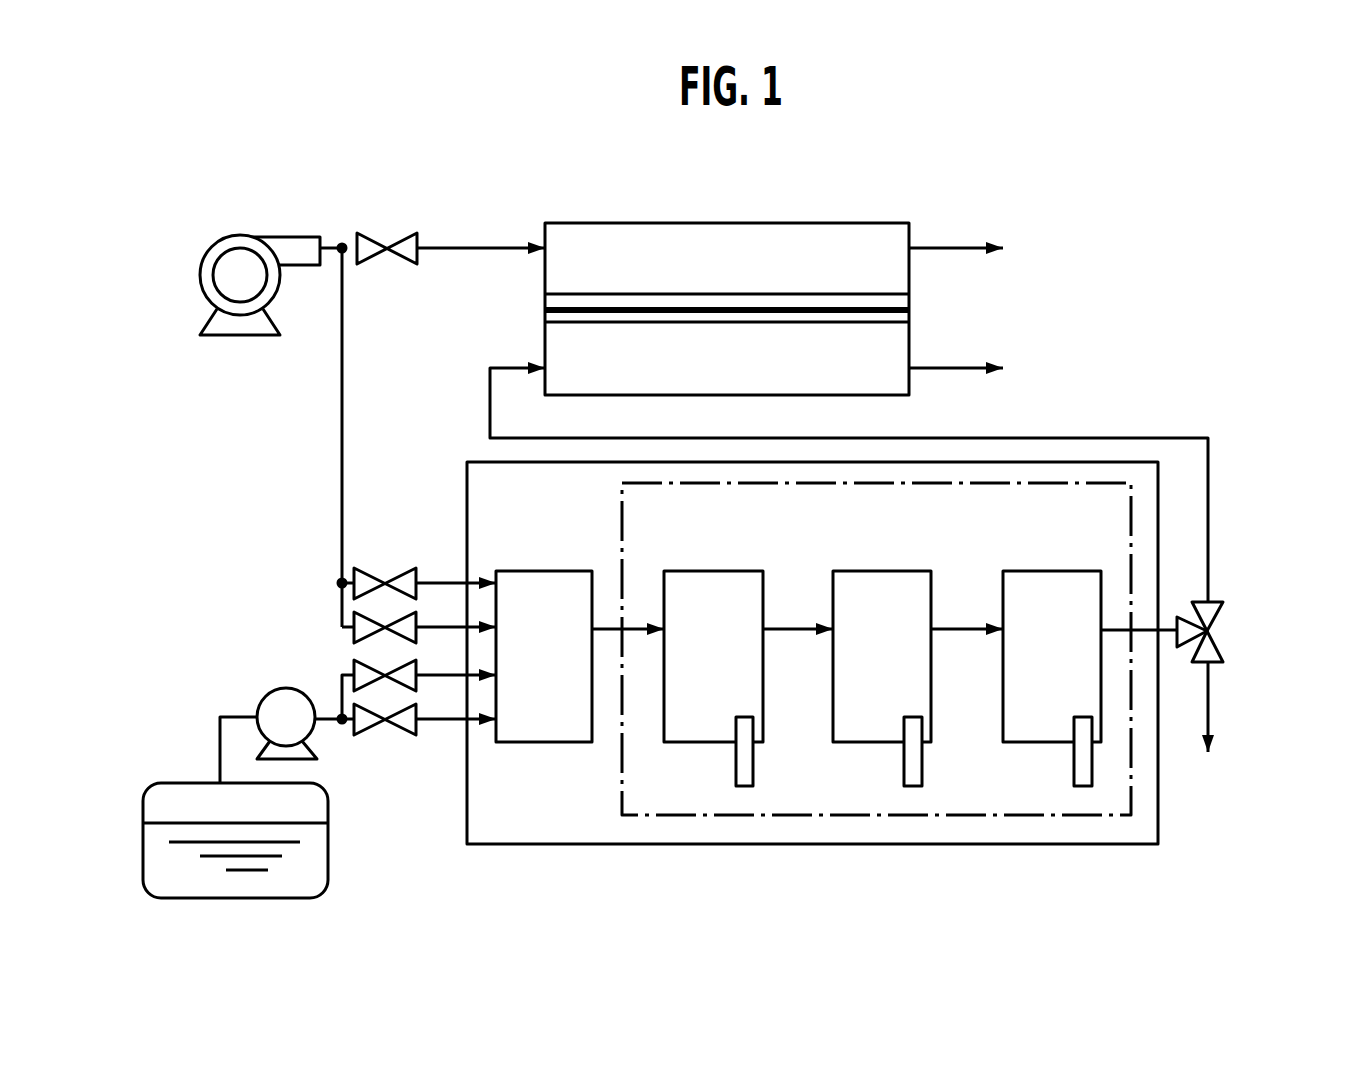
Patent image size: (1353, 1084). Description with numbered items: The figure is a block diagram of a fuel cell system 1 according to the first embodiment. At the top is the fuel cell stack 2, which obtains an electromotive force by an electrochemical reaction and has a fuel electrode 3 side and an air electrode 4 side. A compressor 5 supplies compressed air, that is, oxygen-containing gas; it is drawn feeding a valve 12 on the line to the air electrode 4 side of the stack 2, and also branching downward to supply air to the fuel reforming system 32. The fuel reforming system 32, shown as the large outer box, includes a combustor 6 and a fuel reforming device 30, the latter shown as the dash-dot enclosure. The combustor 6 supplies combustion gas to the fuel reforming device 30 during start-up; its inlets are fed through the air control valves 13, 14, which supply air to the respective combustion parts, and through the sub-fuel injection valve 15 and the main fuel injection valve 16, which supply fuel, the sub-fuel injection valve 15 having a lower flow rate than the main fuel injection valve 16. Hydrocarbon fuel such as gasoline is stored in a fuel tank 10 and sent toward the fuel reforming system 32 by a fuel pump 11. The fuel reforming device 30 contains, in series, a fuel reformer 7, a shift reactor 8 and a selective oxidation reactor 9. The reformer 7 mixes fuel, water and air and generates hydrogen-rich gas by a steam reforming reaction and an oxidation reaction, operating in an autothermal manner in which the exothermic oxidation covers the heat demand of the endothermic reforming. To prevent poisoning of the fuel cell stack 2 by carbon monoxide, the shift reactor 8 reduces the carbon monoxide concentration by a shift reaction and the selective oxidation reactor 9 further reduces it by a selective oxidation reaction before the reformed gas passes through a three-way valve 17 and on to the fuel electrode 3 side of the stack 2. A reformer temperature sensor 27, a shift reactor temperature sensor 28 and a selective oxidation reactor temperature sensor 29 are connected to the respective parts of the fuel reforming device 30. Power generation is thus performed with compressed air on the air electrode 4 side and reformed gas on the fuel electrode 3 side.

The fuel cell system 1 is at (512, 222).
The fuel cell stack 2 is at (710, 222).
The fuel electrode 3 is at (630, 323).
The air electrode 4 is at (705, 294).
The compressor 5 is at (200, 275).
The combustor 6 is at (552, 571).
The fuel reformer 7 is at (716, 571).
The shift reactor 8 is at (884, 571).
The selective oxidation reactor 9 is at (1058, 571).
The fuel tank 10 is at (318, 872).
The fuel pump 11 is at (277, 688).
The gas supply valve 12 is at (398, 237).
The air control valve 13 is at (402, 568).
The air control valve 14 is at (355, 620).
The sub-fuel injection valve 15 is at (354, 665).
The main fuel injection valve 16 is at (413, 733).
The three-way valve 17 is at (1222, 620).
The reformer temperature sensor 27 is at (735, 778).
The shift reactor temperature sensor 28 is at (903, 781).
The selective oxidation reactor temperature sensor 29 is at (1073, 781).
The fuel reforming device 30 is at (1131, 790).
The fuel reforming system 32 is at (1088, 846).